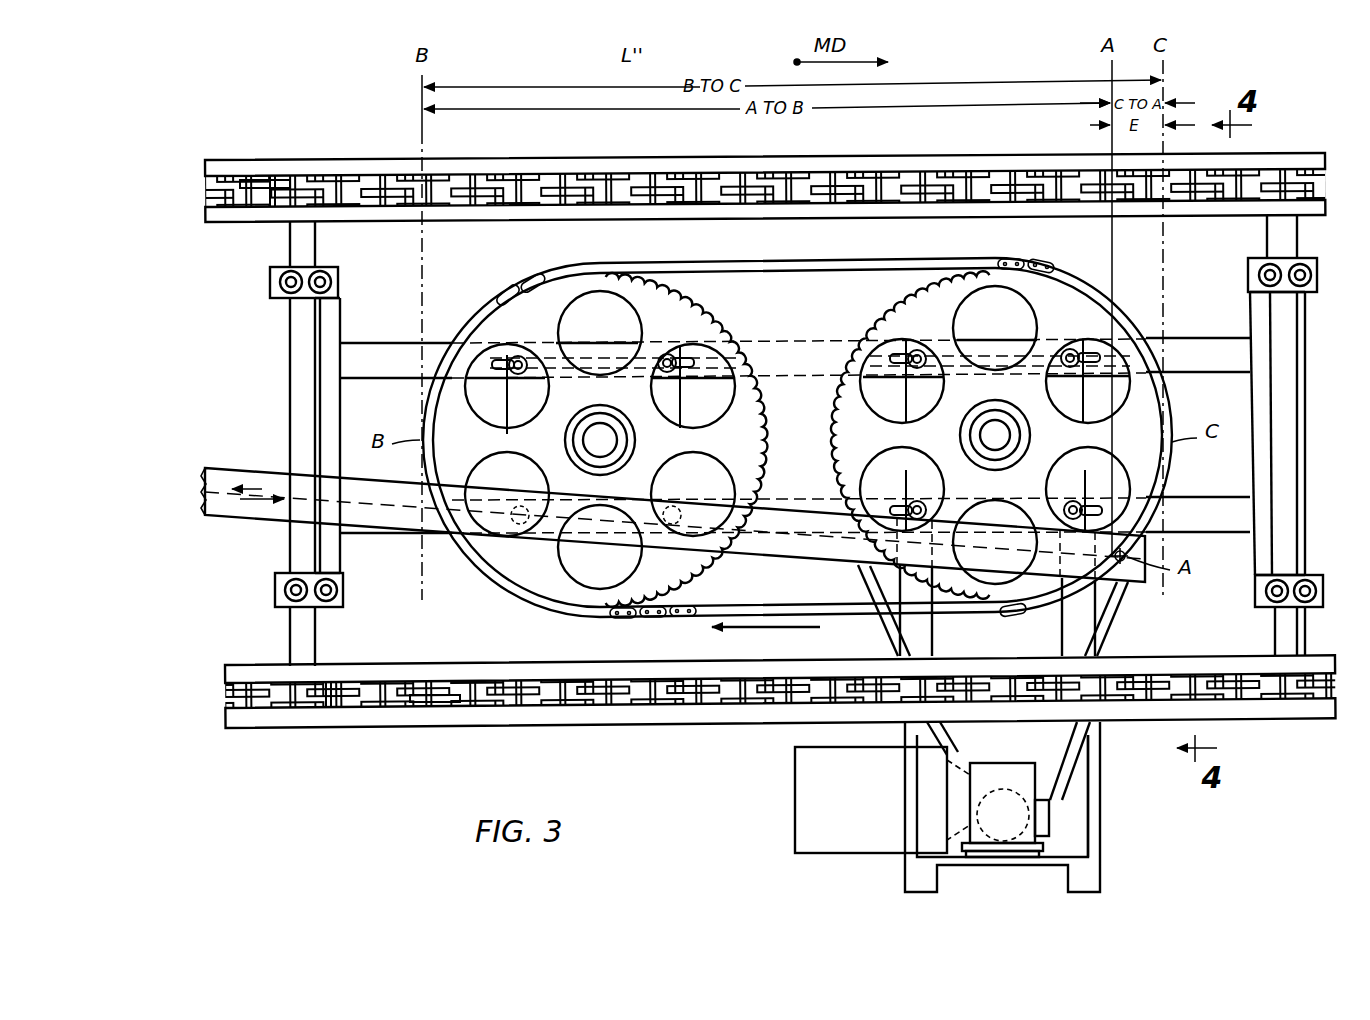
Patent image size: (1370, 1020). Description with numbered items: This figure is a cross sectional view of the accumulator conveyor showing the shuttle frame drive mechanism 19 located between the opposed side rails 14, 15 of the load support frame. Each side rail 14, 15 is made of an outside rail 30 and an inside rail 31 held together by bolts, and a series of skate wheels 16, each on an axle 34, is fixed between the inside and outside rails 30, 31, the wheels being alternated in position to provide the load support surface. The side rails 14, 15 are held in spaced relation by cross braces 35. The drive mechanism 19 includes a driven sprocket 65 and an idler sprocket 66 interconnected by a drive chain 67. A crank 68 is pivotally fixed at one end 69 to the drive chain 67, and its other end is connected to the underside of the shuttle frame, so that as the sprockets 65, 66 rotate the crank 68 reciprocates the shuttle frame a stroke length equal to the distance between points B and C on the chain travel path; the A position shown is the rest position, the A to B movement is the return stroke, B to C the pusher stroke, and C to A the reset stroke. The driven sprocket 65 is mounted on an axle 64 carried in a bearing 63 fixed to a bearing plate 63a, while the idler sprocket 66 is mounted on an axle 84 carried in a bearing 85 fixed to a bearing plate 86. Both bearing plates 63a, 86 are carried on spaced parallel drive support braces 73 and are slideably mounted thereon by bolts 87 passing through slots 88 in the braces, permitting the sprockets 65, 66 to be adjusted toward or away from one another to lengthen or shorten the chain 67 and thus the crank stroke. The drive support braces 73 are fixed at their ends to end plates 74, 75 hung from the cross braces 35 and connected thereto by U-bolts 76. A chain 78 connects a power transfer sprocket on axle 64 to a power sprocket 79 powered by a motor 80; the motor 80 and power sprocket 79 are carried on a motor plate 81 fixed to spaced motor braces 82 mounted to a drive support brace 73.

The side rail 14 is at (227, 724).
The side rail 15 is at (205, 160).
The skate wheels 16 is at (272, 192).
The shuttle frame drive mechanism 19 is at (901, 744).
The outside rail 30 is at (326, 160).
The inside rail 31 is at (258, 222).
The axle 34 is at (268, 183).
The cross braces 35 is at (300, 640).
The bearing 63 is at (980, 434).
The bearing plate 63a is at (907, 402).
The axle 64 is at (972, 437).
The driven sprocket 65 is at (1165, 462).
The idler sprocket 66 is at (616, 440).
The drive chain 67 is at (808, 262).
The crank 68 is at (270, 470).
The crank end 69 is at (1130, 557).
The drive support braces 73 is at (792, 352).
The end plate 74 is at (342, 566).
The end plate 75 is at (1257, 447).
The U-bolts 76 is at (282, 284).
The chain 78 is at (1110, 622).
The power sprocket 79 is at (990, 782).
The motor 80 is at (856, 824).
The motor plate 81 is at (1092, 843).
The motor braces 82 is at (920, 895).
The axle 84 is at (628, 440).
The bearing 85 is at (572, 436).
The bearing plate 86 is at (697, 420).
The bolts 87 is at (515, 373).
The slots 88 is at (628, 345).